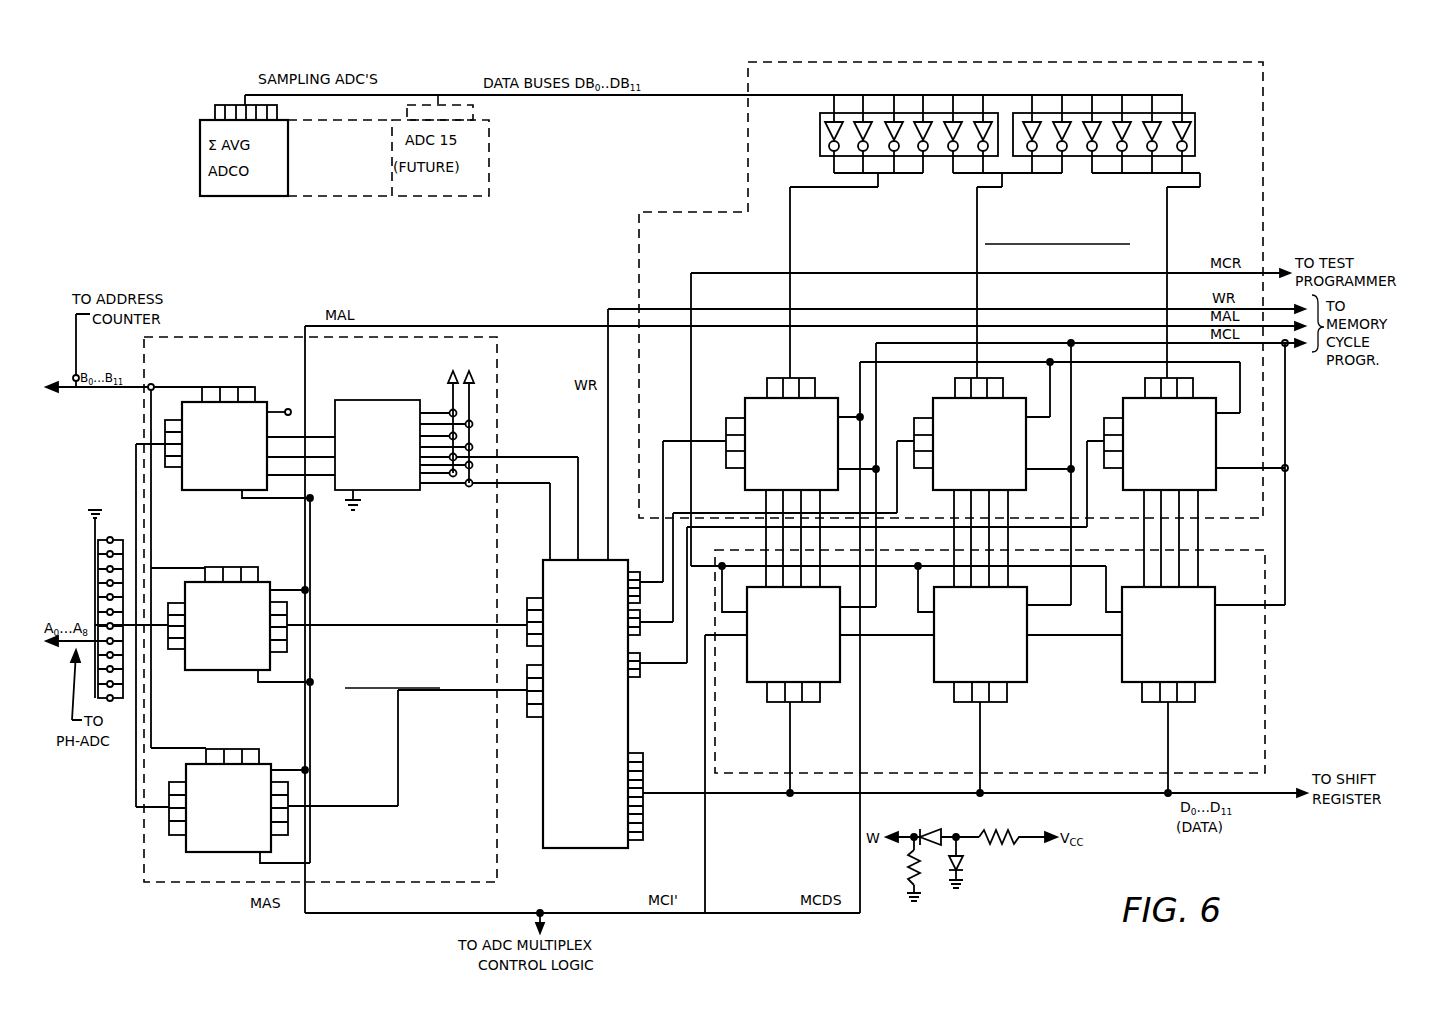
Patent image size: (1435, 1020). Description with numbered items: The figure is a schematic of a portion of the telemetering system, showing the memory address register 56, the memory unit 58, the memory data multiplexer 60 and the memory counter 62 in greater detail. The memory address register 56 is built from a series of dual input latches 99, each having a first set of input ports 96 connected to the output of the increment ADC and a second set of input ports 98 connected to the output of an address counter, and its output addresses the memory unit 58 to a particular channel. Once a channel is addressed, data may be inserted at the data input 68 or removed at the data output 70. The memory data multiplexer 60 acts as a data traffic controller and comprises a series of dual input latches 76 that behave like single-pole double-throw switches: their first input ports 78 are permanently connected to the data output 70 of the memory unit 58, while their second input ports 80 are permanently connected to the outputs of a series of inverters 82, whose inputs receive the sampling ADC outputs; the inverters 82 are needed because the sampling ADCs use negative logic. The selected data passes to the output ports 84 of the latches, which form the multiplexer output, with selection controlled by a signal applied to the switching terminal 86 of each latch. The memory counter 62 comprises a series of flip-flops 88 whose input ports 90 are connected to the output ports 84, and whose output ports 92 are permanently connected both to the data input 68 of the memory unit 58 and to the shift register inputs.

The memory address register 56 is at (177, 871).
The memory unit 58 is at (546, 848).
The memory data multiplexer 60 is at (750, 184).
The memory counter 62 is at (1255, 641).
The data input 68 is at (643, 800).
The data output 70 is at (635, 674).
The dual input latches 76 is at (796, 400).
The first input ports 78 is at (730, 438).
The second input ports 80 is at (776, 384).
The inverters 82 is at (820, 137).
The output ports 84 is at (775, 494).
The switching terminal 86 is at (858, 414).
The flip-flops 88 is at (770, 675).
The input ports 90 is at (802, 564).
The output ports 92 is at (806, 694).
The first set of input ports 96 is at (176, 462).
The second set of input ports 98 is at (232, 396).
The dual input latches 99 is at (244, 436).